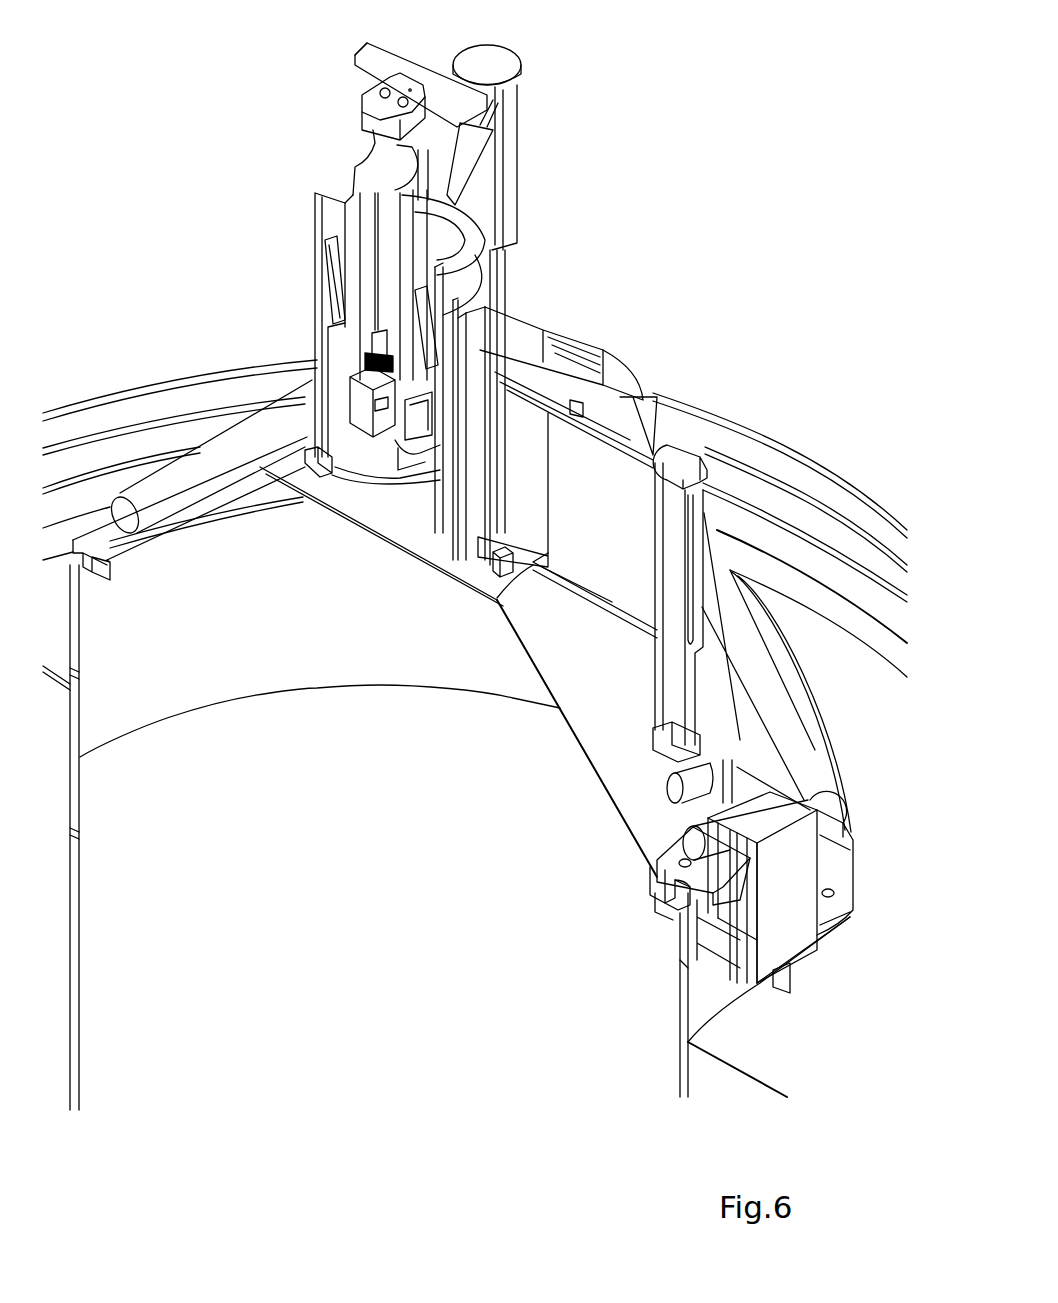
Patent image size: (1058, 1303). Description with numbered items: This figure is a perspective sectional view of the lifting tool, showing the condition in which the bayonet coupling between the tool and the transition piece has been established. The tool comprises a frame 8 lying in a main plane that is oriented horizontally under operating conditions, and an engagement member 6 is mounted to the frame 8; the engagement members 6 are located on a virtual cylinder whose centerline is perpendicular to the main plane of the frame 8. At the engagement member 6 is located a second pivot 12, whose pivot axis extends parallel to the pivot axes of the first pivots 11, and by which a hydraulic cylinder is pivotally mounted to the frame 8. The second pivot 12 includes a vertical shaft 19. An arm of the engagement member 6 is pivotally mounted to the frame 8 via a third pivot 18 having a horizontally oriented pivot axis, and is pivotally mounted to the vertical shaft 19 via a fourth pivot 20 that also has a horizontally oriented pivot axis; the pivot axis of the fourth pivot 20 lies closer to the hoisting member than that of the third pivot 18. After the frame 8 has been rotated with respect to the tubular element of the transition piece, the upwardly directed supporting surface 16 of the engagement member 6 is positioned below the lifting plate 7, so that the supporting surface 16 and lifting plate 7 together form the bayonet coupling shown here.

The engagement member 6 is at (783, 898).
The lifting plate 7 is at (673, 853).
The frame 8 is at (727, 600).
The first pivot 11 is at (477, 333).
The second pivot 12 is at (682, 455).
The supporting surface 16 is at (693, 885).
The third pivot 18 is at (692, 840).
The vertical shaft 19 is at (670, 688).
The fourth pivot 20 is at (697, 775).